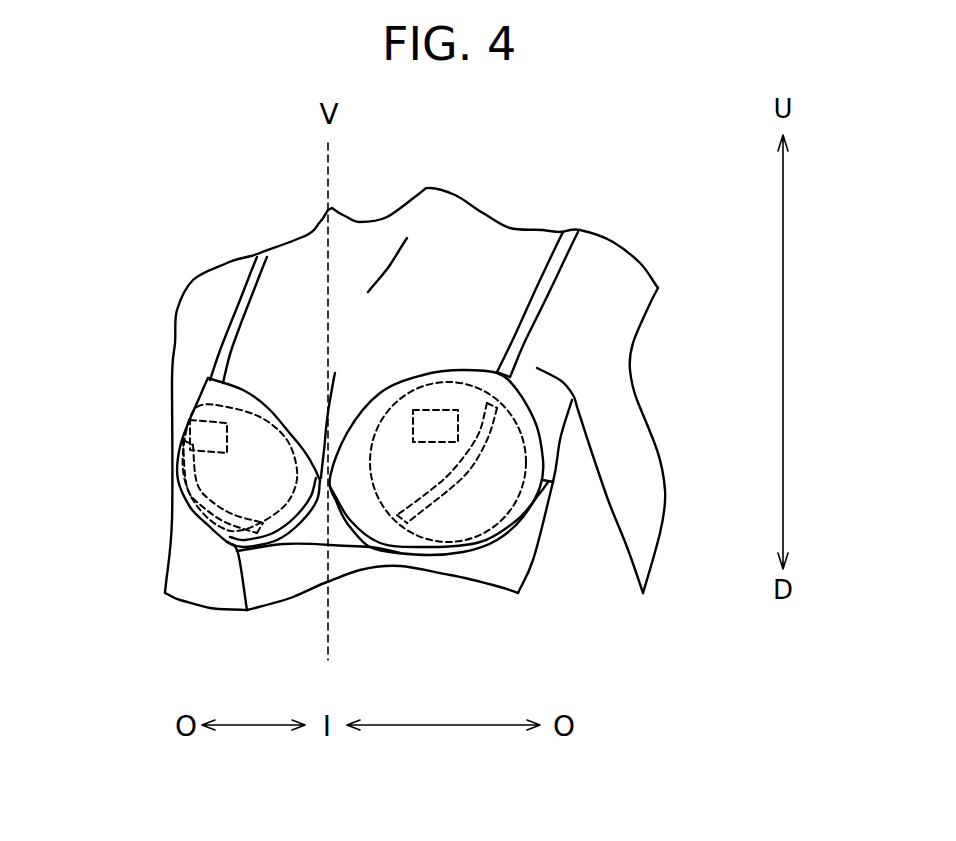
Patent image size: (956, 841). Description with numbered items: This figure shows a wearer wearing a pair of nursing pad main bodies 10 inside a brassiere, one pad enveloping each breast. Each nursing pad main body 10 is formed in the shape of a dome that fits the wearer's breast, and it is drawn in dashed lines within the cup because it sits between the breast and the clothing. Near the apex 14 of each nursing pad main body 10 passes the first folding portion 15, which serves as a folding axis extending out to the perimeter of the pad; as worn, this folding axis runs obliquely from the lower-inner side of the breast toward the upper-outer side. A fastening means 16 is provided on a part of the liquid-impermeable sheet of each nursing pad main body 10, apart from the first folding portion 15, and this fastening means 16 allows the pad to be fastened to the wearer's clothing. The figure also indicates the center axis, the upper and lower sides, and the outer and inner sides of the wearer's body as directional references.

The nursing pad main body 10 is at (207, 467).
The apex 14 is at (203, 502).
The first folding portion 15 is at (185, 470).
The fastening means 16 is at (200, 422).